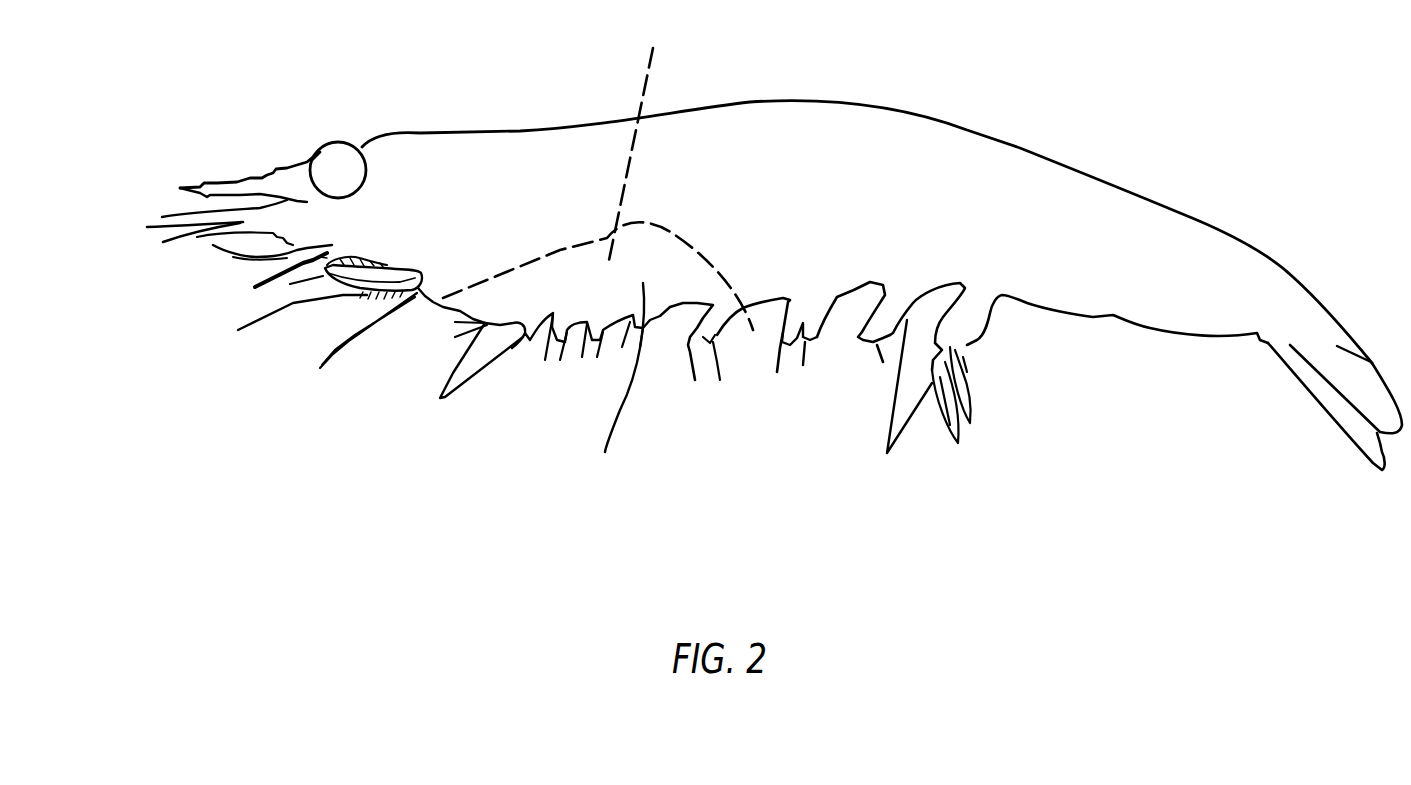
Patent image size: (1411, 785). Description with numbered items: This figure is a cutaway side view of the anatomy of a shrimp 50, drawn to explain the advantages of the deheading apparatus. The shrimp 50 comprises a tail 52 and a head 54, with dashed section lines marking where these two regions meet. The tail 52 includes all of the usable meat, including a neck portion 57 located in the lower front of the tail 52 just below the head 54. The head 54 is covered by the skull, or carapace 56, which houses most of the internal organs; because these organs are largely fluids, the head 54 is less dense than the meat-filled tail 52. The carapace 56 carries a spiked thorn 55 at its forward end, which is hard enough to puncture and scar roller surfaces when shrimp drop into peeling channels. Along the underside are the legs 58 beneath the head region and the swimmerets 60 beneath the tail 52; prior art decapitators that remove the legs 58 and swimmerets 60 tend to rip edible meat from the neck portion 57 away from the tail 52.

The shrimp 50 is at (738, 452).
The tail 52 is at (842, 248).
The head 54 is at (557, 254).
The thorn 55 is at (268, 173).
The carapace 56 is at (555, 133).
The neck portion 57 is at (598, 406).
The legs 58 is at (527, 392).
The swimmerets 60 is at (899, 427).